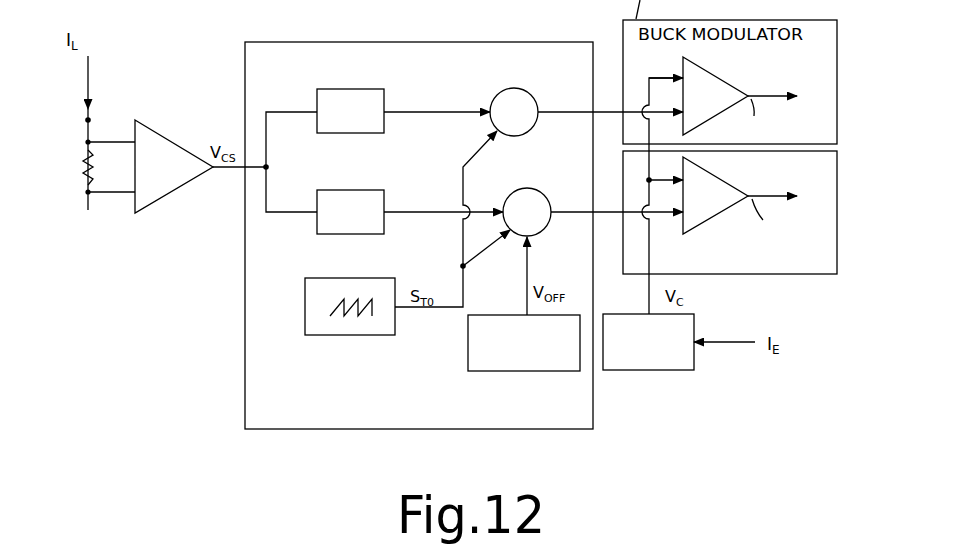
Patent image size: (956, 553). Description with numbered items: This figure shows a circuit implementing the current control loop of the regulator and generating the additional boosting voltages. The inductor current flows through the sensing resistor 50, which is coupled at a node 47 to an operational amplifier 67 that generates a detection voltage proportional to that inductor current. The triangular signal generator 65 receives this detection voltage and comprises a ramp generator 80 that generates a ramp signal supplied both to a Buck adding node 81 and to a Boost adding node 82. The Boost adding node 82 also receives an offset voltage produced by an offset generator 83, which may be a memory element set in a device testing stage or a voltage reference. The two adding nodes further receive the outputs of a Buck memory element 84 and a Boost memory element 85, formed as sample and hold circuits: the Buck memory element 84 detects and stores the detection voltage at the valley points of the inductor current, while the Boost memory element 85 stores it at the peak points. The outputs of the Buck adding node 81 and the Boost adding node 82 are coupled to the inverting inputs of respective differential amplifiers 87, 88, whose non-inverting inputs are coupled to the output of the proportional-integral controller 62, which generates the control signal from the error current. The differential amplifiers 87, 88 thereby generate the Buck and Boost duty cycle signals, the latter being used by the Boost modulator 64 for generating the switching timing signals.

The current sense node 47 is at (90, 118).
The sensing resistor 50 is at (85, 162).
The operational amplifier 67 is at (178, 139).
The triangular signal generator 65 is at (565, 44).
The Buck memory element 84 is at (385, 92).
The Boost memory element 85 is at (385, 188).
The Buck adding node 81 is at (516, 89).
The Boost adding node 82 is at (529, 189).
The ramp generator 80 is at (362, 336).
The offset generator 83 is at (466, 360).
The differential amplifier 87 is at (728, 78).
The differential amplifier 88 is at (720, 179).
The Boost modulator 64 is at (776, 275).
The controller 62 is at (655, 371).